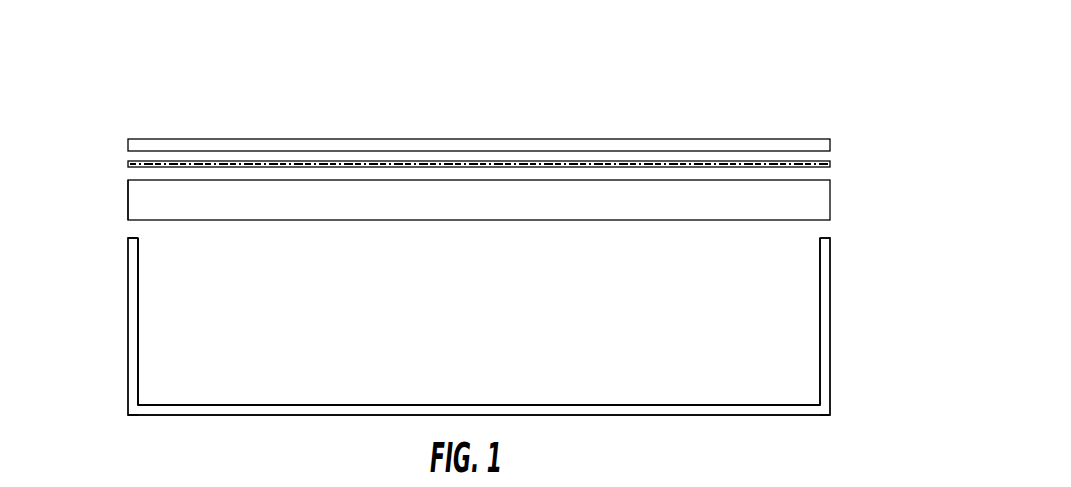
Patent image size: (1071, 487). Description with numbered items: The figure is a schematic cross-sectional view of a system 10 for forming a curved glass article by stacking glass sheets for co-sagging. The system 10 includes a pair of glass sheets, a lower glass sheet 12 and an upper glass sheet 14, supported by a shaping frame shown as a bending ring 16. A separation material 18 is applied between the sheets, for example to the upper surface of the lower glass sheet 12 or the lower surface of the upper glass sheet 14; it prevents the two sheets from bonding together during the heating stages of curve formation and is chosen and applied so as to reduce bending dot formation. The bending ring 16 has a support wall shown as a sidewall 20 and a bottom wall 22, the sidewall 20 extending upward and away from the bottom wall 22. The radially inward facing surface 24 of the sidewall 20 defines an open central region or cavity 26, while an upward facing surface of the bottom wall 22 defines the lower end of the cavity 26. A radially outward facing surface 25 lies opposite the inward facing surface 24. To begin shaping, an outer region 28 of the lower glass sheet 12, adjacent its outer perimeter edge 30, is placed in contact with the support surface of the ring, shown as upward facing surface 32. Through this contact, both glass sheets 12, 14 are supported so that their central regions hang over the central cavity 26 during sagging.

The system 10 is at (475, 240).
The glass sheet 12 is at (813, 201).
The glass sheet 14 is at (793, 139).
The bending ring 16 is at (506, 351).
The separation material 18 is at (828, 165).
The sidewall 20 is at (133, 347).
The bottom wall 22 is at (245, 410).
The radially inward facing surface 24 is at (142, 323).
The radially outward facing surface 25 is at (834, 301).
The cavity 26 is at (366, 366).
The outer region 28 is at (453, 144).
The outer perimeter edge 30 is at (126, 195).
The upward facing surface 32 is at (138, 237).